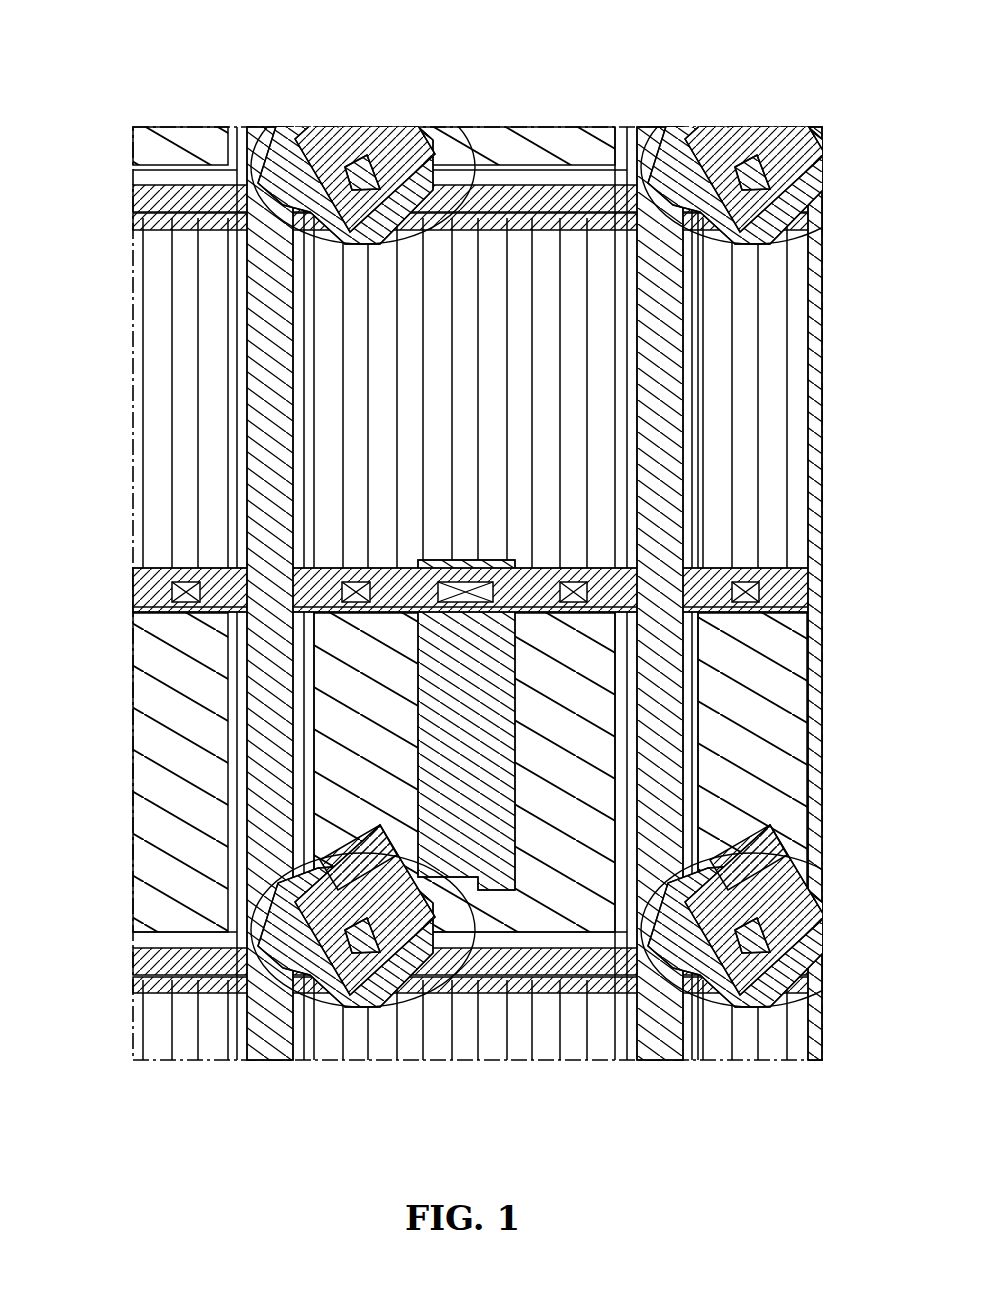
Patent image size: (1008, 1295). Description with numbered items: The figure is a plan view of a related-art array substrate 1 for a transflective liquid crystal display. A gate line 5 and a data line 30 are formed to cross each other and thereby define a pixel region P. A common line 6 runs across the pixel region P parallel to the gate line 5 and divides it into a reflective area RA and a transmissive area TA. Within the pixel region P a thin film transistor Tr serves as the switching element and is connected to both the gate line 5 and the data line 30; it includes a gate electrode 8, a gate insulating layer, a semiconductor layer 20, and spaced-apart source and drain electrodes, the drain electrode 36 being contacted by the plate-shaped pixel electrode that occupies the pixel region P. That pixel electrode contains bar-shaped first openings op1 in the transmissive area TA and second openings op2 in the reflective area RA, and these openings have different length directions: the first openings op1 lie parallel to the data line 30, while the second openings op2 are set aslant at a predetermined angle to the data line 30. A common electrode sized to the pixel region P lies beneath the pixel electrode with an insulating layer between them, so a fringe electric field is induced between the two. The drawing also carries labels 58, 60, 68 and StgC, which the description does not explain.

The array substrate 1 is at (776, 92).
The gate line 5 is at (575, 965).
The common line 6 is at (130, 582).
The gate electrode 8 is at (380, 868).
The semiconductor layer 20 is at (343, 933).
The data line 30 is at (268, 690).
The drain electrode 36 is at (395, 962).
The pixel contact hole 58 is at (461, 568).
The thin film transistor 60 is at (450, 198).
The contact hole 68 is at (571, 568).
The pixel region P is at (346, 312).
The first openings op1 is at (320, 373).
The second openings op2 is at (156, 760).
The storage capacitor StgC is at (520, 622).
The thin film transistor Tr is at (313, 858).
The transmissive area TA is at (826, 228).
The reflective area RA is at (826, 616).